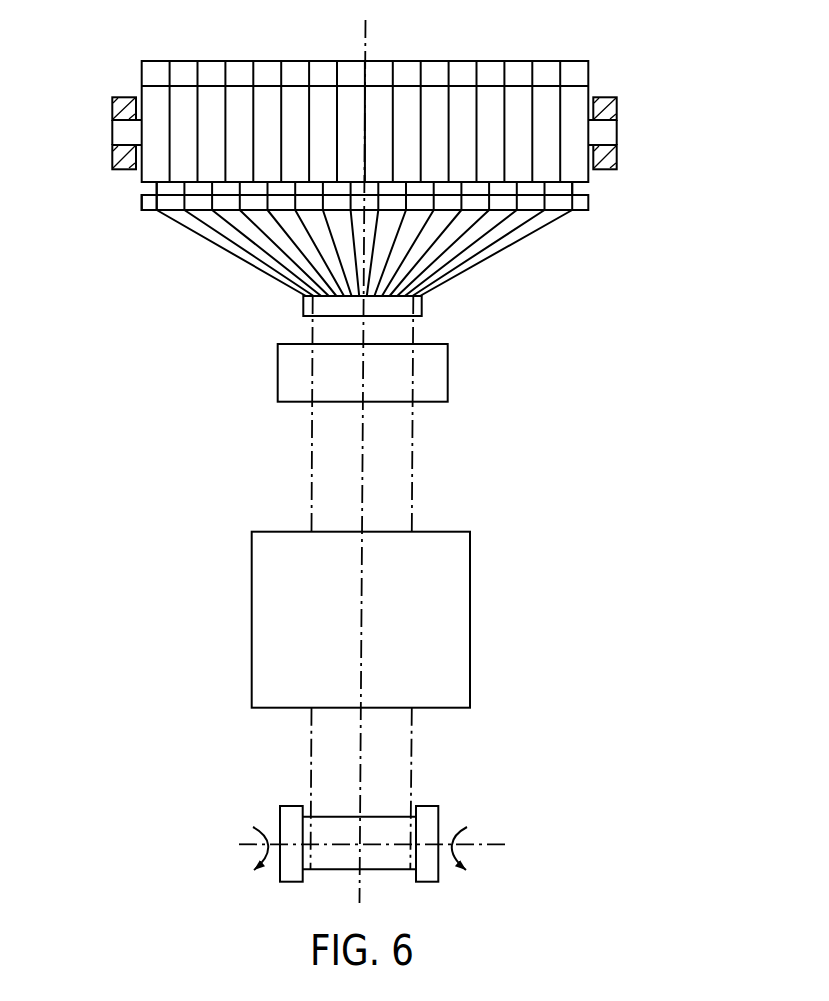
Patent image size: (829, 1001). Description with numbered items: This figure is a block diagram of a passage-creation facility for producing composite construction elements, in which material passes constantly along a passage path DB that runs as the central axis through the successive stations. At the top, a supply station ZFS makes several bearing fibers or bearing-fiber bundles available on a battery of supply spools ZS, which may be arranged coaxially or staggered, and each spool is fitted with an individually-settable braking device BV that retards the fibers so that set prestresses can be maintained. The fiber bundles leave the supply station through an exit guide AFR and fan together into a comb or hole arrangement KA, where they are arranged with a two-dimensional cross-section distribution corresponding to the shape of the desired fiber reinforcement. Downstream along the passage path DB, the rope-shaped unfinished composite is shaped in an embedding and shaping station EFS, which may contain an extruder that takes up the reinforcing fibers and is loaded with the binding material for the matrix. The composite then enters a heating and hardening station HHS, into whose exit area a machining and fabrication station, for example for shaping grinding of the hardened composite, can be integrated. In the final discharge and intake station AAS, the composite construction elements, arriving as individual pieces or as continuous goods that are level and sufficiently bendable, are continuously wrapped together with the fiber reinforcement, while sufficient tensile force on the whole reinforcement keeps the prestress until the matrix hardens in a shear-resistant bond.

The braking device BV is at (598, 77).
The supply station ZFS is at (649, 153).
The supply spools ZS is at (143, 172).
The exit guide AFR is at (597, 209).
The comb or hole arrangement KA is at (297, 306).
The embedding and shaping station EFS is at (271, 380).
The passage path DB is at (362, 480).
The heating and hardening station HHS is at (236, 611).
The discharge and intake station AAS is at (224, 843).